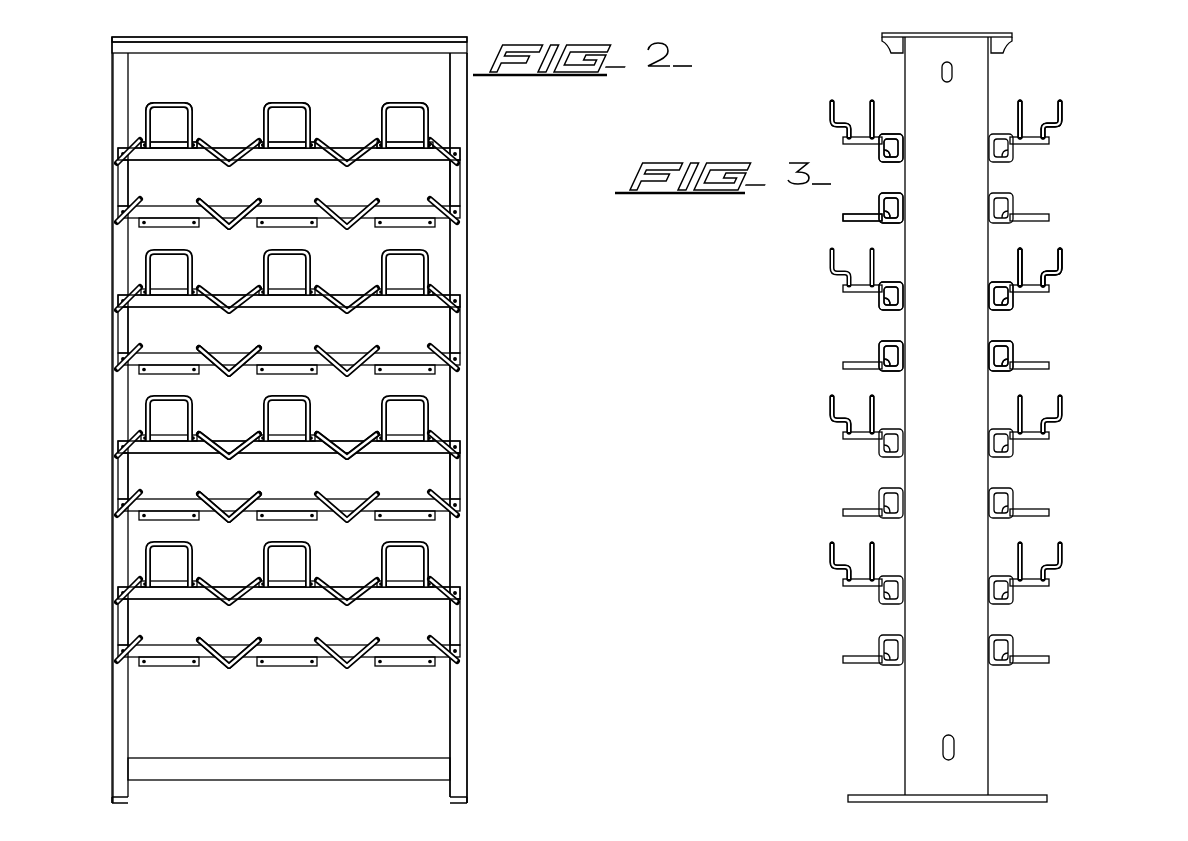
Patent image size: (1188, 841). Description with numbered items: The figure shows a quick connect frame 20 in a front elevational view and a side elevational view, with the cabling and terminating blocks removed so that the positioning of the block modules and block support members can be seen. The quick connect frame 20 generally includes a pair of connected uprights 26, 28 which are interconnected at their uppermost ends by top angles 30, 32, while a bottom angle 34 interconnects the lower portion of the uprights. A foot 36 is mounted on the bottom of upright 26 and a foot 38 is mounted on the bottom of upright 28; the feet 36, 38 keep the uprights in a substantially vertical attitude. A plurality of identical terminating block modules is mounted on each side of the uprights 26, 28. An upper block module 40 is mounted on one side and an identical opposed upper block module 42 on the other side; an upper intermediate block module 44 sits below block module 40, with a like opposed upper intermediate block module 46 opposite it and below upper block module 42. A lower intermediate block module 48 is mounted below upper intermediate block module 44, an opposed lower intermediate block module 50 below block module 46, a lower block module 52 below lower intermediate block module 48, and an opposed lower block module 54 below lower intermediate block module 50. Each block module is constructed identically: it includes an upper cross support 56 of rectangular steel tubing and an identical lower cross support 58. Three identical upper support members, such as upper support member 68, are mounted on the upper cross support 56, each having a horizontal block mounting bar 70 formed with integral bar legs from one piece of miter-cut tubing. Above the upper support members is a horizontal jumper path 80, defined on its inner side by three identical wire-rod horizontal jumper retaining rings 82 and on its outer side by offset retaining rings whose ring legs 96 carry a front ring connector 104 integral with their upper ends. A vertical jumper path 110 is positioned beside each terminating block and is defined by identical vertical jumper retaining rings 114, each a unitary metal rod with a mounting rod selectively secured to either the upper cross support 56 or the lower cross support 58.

In FIG. 2, the quick connect frame 20 is at (106, 89).
In FIG. 2, the upright 26 is at (114, 132).
In FIG. 2, the upright 28 is at (466, 122).
In FIG. 3, the upright 28 is at (957, 100).
In FIG. 2, the top angle 30 is at (336, 30).
In FIG. 3, the top angle 30 is at (886, 49).
In FIG. 3, the top angle 32 is at (1003, 50).
In FIG. 2, the bottom angle 34 is at (305, 758).
In FIG. 2, the foot 36 is at (103, 796).
In FIG. 2, the foot 38 is at (476, 797).
In FIG. 3, the foot 38 is at (1020, 795).
In FIG. 2, the upper block module 40 is at (471, 183).
In FIG. 3, the upper block module 40 is at (841, 215).
In FIG. 3, the opposed upper block module 42 is at (1051, 138).
In FIG. 2, the upper intermediate block module 44 is at (471, 325).
In FIG. 3, the upper intermediate block module 44 is at (841, 290).
In FIG. 3, the opposed upper intermediate block module 46 is at (1051, 290).
In FIG. 2, the lower intermediate block module 48 is at (471, 468).
In FIG. 3, the lower intermediate block module 48 is at (841, 435).
In FIG. 3, the opposed lower intermediate block module 50 is at (1051, 430).
In FIG. 2, the lower block module 52 is at (471, 613).
In FIG. 3, the lower block module 52 is at (841, 580).
In FIG. 3, the opposed lower block module 54 is at (1051, 580).
In FIG. 2, the upper cross support 56 is at (273, 157).
In FIG. 2, the lower cross support 58 is at (297, 213).
In FIG. 3, the upper support member 68 is at (839, 140).
In FIG. 3, the horizontal block mounting bar 70 is at (845, 222).
In FIG. 3, the horizontal jumper path 80 is at (1041, 257).
In FIG. 3, the horizontal jumper retaining ring 82 is at (1022, 108).
In FIG. 3, the ring leg 96 is at (1062, 112).
In FIG. 2, the front ring connector 104 is at (172, 104).
In FIG. 2, the vertical jumper path 110 is at (325, 431).
In FIG. 3, the vertical jumper path 110 is at (881, 303).
In FIG. 3, the vertical jumper retaining ring 114 is at (877, 166).